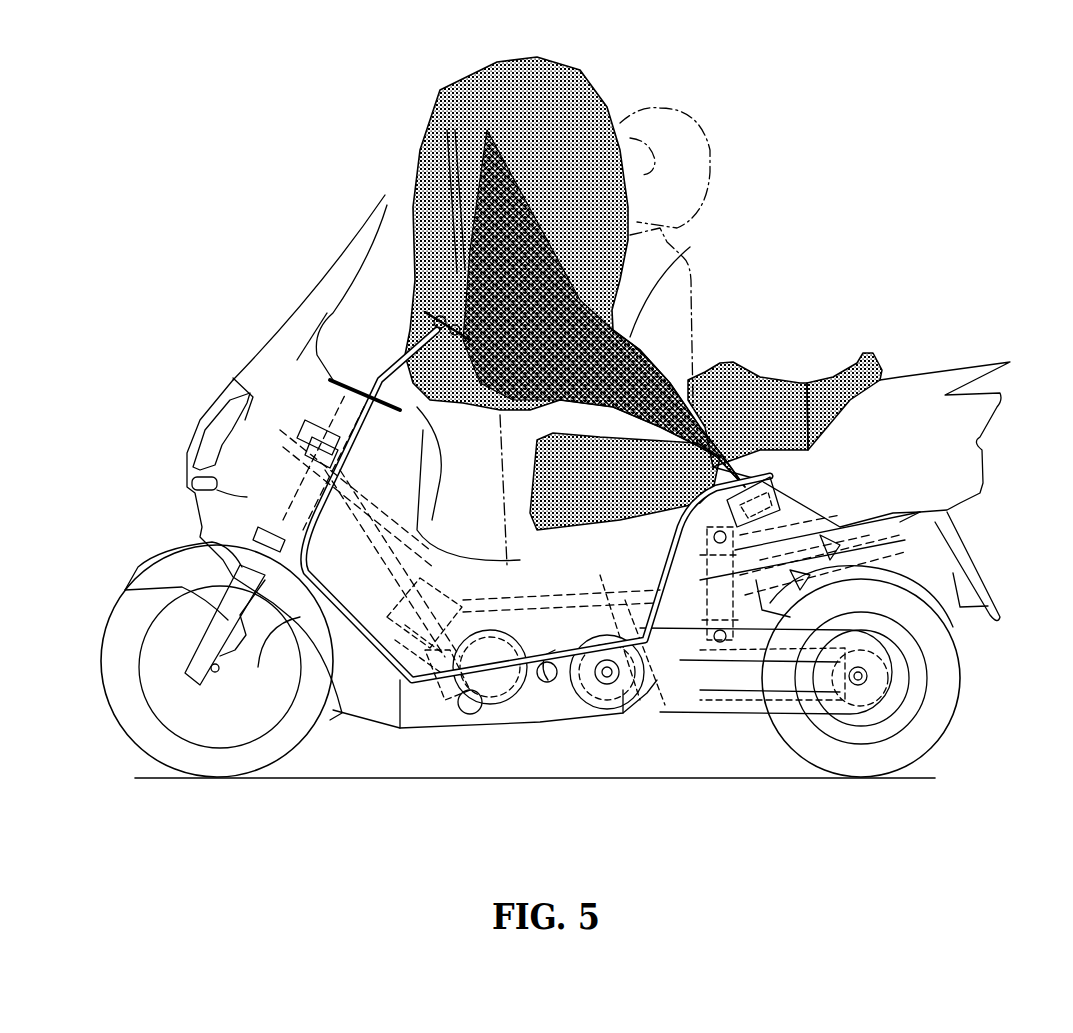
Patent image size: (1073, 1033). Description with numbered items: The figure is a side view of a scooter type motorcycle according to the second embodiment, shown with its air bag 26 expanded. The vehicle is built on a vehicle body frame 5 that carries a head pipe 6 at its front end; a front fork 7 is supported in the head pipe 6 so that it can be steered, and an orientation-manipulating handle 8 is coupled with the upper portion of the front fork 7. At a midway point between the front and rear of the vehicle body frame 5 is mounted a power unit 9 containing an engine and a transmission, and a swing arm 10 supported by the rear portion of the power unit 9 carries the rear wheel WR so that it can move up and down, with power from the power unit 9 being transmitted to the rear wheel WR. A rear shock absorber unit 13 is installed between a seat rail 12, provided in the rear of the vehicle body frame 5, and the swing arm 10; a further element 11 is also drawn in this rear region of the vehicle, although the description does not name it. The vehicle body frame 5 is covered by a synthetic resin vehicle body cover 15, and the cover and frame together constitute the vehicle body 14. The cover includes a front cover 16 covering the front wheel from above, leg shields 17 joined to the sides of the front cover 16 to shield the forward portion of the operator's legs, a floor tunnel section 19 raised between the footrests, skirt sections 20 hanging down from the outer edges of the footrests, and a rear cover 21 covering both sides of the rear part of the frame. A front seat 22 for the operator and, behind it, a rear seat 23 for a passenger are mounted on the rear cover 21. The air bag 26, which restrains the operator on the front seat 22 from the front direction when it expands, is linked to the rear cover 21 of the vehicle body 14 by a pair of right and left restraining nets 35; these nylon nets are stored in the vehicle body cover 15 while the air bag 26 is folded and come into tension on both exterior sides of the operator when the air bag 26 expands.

The vehicle body frame 5 is at (410, 507).
The head pipe 6 is at (315, 485).
The front fork 7 is at (222, 580).
The orientation-manipulating handle 8 is at (432, 310).
The power unit 9 is at (448, 702).
The swing arm 10 is at (817, 677).
The rear cushion 11 is at (733, 690).
The seat rail 12 is at (830, 508).
The rear shock absorber unit 13 is at (900, 592).
The vehicle body 14 is at (922, 366).
The vehicle body cover 15 is at (186, 446).
The front cover 16 is at (300, 352).
The leg shield 17 is at (296, 617).
The floor tunnel section 19 is at (443, 520).
The skirt section 20 is at (366, 705).
The rear cover 21 is at (805, 383).
The front seat 22 is at (612, 532).
The rear seat 23 is at (836, 380).
The air bag 26 is at (405, 245).
The restraining net 35 is at (690, 287).
The rear wheel WR is at (950, 704).